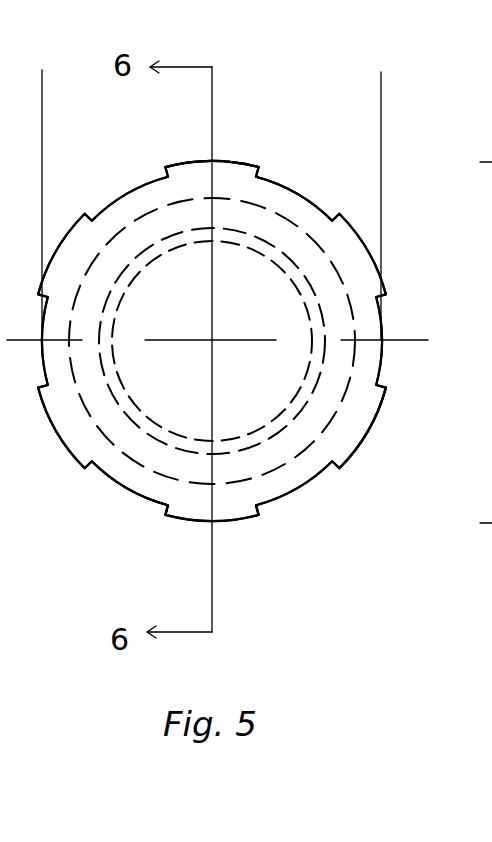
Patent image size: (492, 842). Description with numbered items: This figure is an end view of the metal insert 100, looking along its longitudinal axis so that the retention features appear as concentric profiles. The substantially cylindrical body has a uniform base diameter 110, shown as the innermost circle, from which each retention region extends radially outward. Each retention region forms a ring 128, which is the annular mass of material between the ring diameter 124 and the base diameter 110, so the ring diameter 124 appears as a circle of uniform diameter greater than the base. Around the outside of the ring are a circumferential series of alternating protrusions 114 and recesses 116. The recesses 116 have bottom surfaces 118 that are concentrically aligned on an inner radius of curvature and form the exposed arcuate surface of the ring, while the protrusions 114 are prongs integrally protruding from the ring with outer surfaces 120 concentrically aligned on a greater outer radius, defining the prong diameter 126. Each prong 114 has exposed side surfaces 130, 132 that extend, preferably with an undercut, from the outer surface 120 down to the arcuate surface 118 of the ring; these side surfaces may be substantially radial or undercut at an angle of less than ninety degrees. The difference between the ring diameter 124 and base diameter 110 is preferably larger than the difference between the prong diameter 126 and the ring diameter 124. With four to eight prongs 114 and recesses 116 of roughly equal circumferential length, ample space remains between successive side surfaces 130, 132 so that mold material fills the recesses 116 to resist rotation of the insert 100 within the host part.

The metal insert 100 is at (267, 92).
The base diameter 110 is at (276, 474).
The protrusions 114 is at (238, 155).
The recesses 116 is at (113, 196).
The bottom surfaces 118 is at (286, 187).
The outer surfaces 120 is at (366, 443).
The ring diameter 124 is at (59, 130).
The prong diameter 126 is at (491, 232).
The ring 128 is at (125, 472).
The side surface 130 is at (163, 508).
The side surface 132 is at (266, 512).